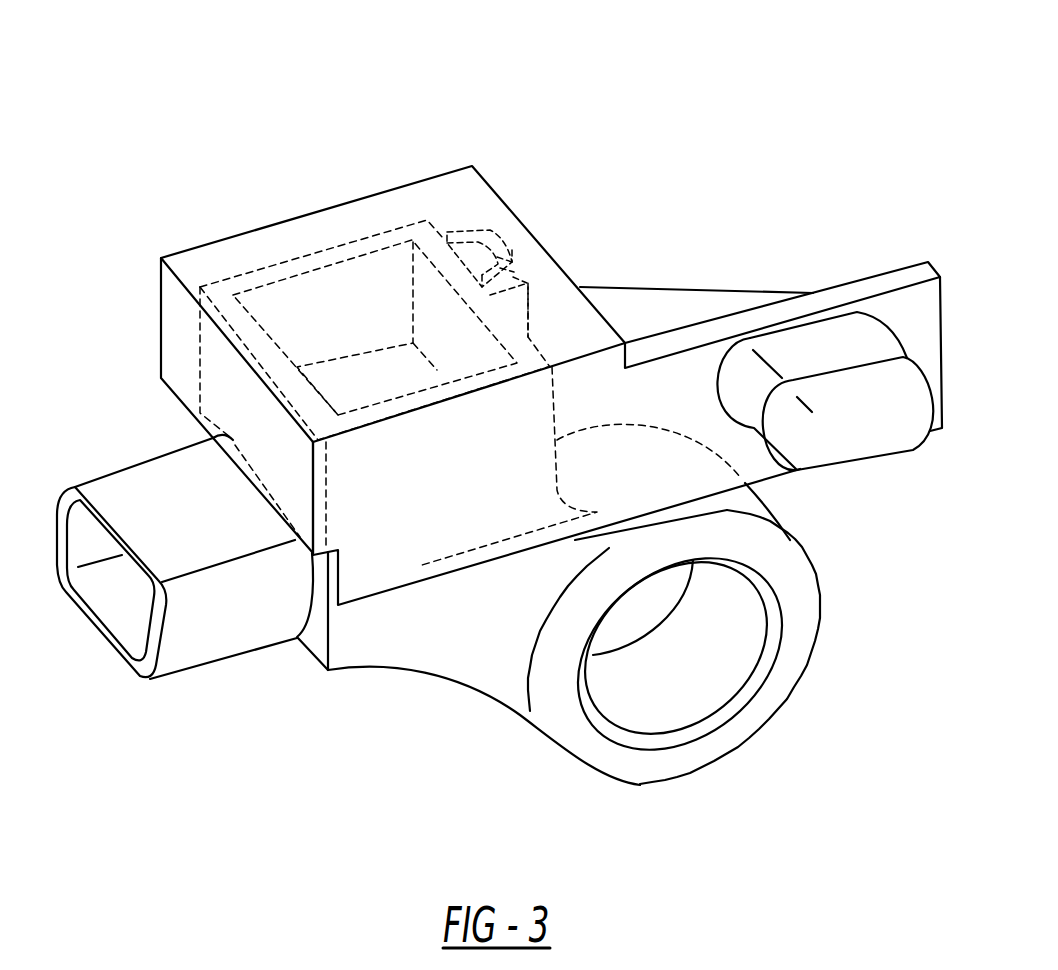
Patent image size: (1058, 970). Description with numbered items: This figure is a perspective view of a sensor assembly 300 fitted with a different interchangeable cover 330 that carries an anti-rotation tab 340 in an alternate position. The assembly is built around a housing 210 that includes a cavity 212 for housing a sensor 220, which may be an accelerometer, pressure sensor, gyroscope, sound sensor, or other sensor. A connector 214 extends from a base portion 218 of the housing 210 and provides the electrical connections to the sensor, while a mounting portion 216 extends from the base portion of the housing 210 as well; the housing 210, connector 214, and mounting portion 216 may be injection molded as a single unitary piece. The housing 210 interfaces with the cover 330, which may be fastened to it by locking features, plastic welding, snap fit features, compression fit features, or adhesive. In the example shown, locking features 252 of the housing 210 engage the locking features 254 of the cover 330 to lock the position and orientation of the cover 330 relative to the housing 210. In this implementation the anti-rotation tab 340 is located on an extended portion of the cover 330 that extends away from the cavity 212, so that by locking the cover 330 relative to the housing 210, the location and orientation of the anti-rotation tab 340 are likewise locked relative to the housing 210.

The sensor assembly 300 is at (697, 125).
The cover 330 is at (452, 198).
The housing 210 is at (231, 306).
The cavity 212 is at (352, 317).
The sensor 220 is at (385, 353).
The locking features 252 is at (473, 227).
The locking features 254 is at (500, 253).
The connector 214 is at (170, 500).
The mounting portion 216 is at (695, 662).
The base portion 218 is at (412, 630).
The anti-rotation tab 340 is at (873, 452).